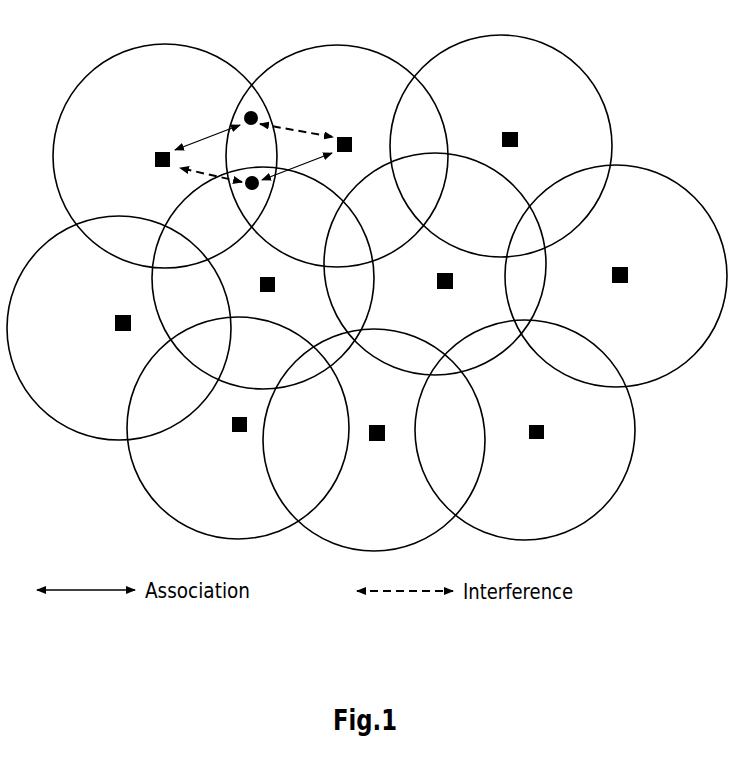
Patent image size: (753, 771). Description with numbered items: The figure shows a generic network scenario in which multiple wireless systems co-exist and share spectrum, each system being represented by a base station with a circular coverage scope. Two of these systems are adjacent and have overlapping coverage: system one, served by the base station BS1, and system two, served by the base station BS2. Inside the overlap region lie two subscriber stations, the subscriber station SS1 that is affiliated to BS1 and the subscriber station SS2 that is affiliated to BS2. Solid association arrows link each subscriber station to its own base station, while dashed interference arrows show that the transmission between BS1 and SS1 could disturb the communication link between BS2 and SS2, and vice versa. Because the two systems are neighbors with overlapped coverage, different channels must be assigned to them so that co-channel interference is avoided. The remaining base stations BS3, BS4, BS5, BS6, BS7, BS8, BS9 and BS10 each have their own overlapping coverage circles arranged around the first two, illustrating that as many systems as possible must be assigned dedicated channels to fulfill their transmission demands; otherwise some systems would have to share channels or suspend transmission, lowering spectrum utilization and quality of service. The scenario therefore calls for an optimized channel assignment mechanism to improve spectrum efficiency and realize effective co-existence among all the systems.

The base station BS1 is at (165, 156).
The base station BS2 is at (337, 156).
The base station BS3 is at (501, 146).
The base station BS4 is at (119, 328).
The base station BS5 is at (263, 278).
The base station BS6 is at (435, 264).
The base station BS7 is at (238, 428).
The base station BS8 is at (374, 440).
The base station BS9 is at (525, 430).
The base station BS10 is at (616, 276).
The subscriber station SS1 is at (254, 130).
The subscriber station SS2 is at (256, 181).